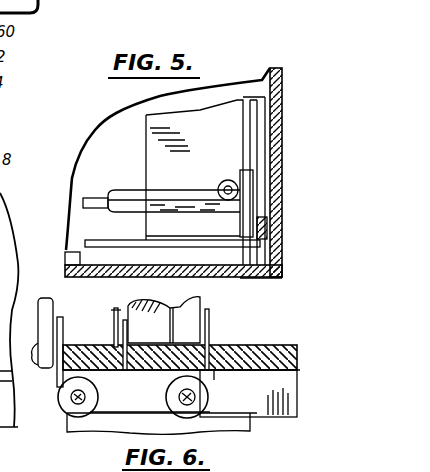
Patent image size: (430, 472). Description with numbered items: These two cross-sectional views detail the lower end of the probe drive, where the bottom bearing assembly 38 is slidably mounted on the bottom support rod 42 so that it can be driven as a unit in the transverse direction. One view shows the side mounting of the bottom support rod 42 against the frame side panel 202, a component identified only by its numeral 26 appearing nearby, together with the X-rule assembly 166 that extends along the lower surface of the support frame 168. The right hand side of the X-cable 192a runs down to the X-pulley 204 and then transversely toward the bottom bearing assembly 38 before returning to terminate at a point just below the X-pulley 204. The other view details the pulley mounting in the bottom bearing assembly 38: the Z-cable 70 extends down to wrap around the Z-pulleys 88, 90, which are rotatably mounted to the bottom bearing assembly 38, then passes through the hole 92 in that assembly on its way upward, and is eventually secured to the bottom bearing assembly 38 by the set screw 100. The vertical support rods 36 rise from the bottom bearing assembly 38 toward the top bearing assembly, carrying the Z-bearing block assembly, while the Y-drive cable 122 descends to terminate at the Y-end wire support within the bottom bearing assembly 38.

In FIG. 5, the housing wall 26 is at (111, 117).
In FIG. 6, the housing wall 26 is at (244, 280).
In FIG. 5, the frame side panel 202 is at (213, 100).
In FIG. 5, the X-cable 192a is at (62, 170).
In FIG. 5, the bottom support rod 42 is at (127, 188).
In FIG. 5, the X-pulley 204 is at (224, 181).
In FIG. 5, the X-rule assembly 166 is at (128, 248).
In FIG. 5, the support frame 168 is at (68, 252).
In FIG. 6, the Z-pulley 88 is at (62, 402).
In FIG. 6, the set screw 100 is at (115, 347).
In FIG. 6, the Y-drive cable 122 is at (116, 310).
In FIG. 6, the Z-cable 70 is at (112, 310).
In FIG. 6, the vertical support rods 36 is at (190, 300).
In FIG. 6, the Z-pulley 90 is at (166, 402).
In FIG. 6, the bottom bearing assembly 38 is at (272, 339).
In FIG. 6, the hole 92 is at (218, 372).